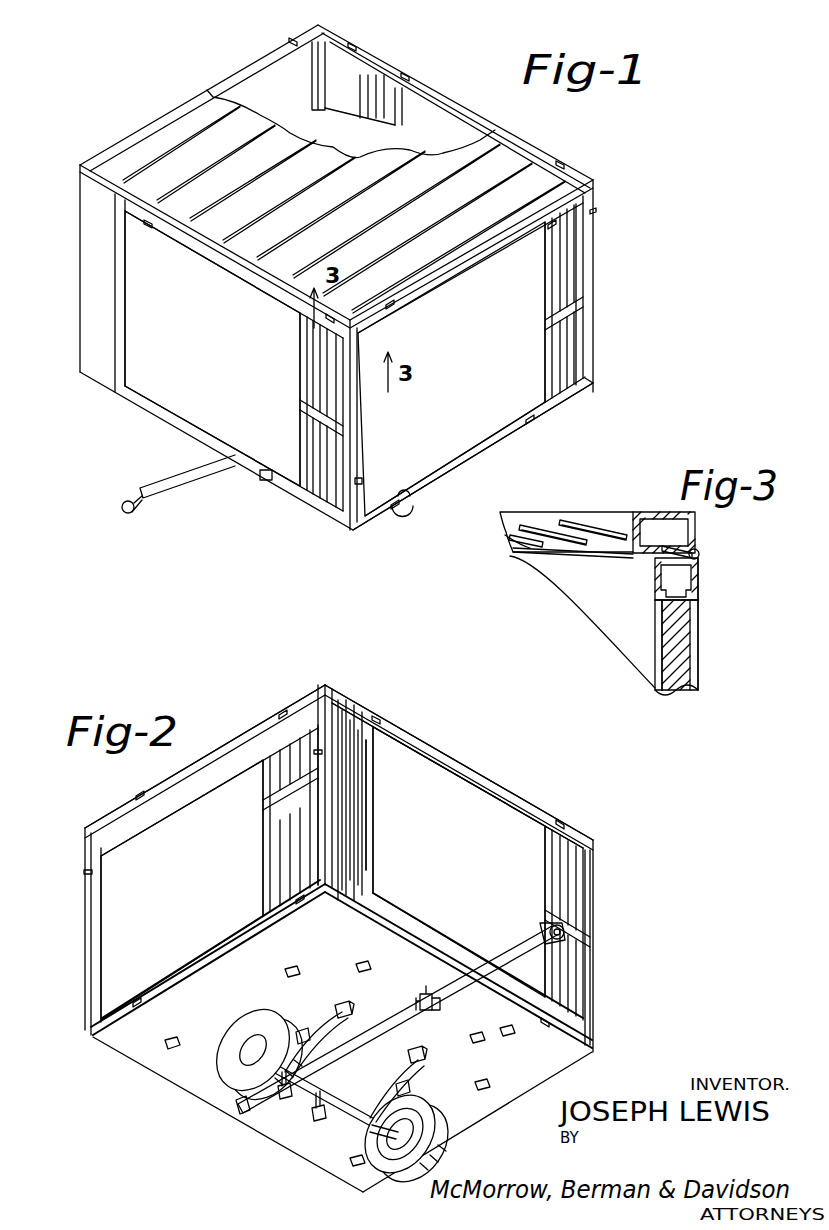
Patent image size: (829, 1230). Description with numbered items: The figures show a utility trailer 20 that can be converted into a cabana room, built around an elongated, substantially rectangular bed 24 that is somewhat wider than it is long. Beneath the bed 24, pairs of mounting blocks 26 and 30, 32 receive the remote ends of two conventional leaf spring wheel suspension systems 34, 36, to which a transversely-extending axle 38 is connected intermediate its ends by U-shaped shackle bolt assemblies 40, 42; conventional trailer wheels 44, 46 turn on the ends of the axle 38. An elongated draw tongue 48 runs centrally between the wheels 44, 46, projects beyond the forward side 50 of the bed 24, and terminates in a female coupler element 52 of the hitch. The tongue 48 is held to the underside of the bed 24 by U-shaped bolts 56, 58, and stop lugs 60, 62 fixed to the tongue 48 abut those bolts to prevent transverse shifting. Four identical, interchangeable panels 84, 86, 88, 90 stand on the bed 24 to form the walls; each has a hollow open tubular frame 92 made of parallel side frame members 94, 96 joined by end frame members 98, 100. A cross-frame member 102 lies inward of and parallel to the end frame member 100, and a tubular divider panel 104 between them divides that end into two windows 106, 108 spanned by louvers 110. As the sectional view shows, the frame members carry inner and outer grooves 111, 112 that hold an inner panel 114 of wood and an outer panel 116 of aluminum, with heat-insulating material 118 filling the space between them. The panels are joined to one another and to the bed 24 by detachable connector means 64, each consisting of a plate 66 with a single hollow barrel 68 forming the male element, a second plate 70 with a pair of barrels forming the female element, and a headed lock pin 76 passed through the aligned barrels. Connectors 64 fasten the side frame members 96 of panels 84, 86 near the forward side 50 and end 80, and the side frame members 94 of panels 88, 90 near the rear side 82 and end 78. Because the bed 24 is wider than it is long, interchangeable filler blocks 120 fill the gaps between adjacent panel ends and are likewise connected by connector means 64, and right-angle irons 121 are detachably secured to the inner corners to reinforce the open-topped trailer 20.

In FIG. 1, the utility trailer 20 is at (132, 426).
In FIG. 2, the utility trailer 20 is at (450, 739).
In FIG. 2, the bed 24 is at (590, 1066).
In FIG. 2, the mounting block 26 is at (352, 1010).
In FIG. 2, the mounting block 30 is at (426, 1057).
In FIG. 2, the mounting block 32 is at (318, 1122).
In FIG. 2, the leaf spring wheel suspension system 34 is at (304, 1030).
In FIG. 2, the leaf spring wheel suspension system 36 is at (412, 1090).
In FIG. 2, the axle 38 is at (330, 1100).
In FIG. 2, the U-shaped shackle bolt assembly 40 is at (313, 1040).
In FIG. 2, the U-shaped shackle bolt assembly 42 is at (368, 1120).
In FIG. 2, the trailer wheel 44 is at (236, 1073).
In FIG. 1, the trailer wheel 46 is at (414, 506).
In FIG. 2, the trailer wheel 46 is at (440, 1145).
In FIG. 1, the draw tongue 48 is at (195, 468).
In FIG. 2, the draw tongue 48 is at (487, 953).
In FIG. 1, the forward side 50 is at (271, 488).
In FIG. 2, the forward side 50 is at (426, 982).
In FIG. 1, the female coupler element 52 is at (133, 513).
In FIG. 2, the female coupler element 52 is at (553, 926).
In FIG. 2, the U-shaped bolt 56 is at (285, 1100).
In FIG. 2, the U-shaped bolt 58 is at (424, 992).
In FIG. 2, the stop lug 60 is at (268, 1114).
In FIG. 2, the stop lug 62 is at (441, 1006).
In FIG. 1, the detachable connector means 64 is at (150, 226).
In FIG. 2, the detachable connector means 64 is at (283, 713).
In FIG. 3, the plate 66 is at (690, 546).
In FIG. 2, the plate 66 is at (362, 964).
In FIG. 1, the hollow tubular barrel 68 is at (293, 40).
In FIG. 3, the second plate 70 is at (692, 575).
In FIG. 2, the second plate 70 is at (180, 1040).
In FIG. 3, the headed lock pin 76 is at (701, 554).
In FIG. 1, the end 78 is at (83, 375).
In FIG. 2, the end 78 is at (245, 935).
In FIG. 1, the end 80 is at (490, 445).
In FIG. 2, the end 80 is at (520, 1108).
In FIG. 1, the rear side 82 is at (593, 390).
In FIG. 2, the rear side 82 is at (165, 1080).
In FIG. 1, the panel 84 is at (138, 404).
In FIG. 2, the panel 84 is at (507, 808).
In FIG. 1, the panel 86 is at (453, 436).
In FIG. 1, the panel 88 is at (493, 108).
In FIG. 1, the panel 90 is at (266, 94).
In FIG. 2, the panel 90 is at (201, 965).
In FIG. 1, the tubular frame 92 is at (233, 268).
In FIG. 2, the tubular frame 92 is at (260, 730).
In FIG. 1, the side frame member 94 is at (268, 300).
In FIG. 2, the side frame member 94 is at (540, 812).
In FIG. 1, the side frame member 96 is at (225, 82).
In FIG. 2, the side frame member 96 is at (222, 760).
In FIG. 1, the end frame member 98 is at (125, 310).
In FIG. 3, the end frame member 98 is at (699, 583).
In FIG. 2, the end frame member 98 is at (372, 820).
In FIG. 1, the end frame member 100 is at (318, 93).
In FIG. 3, the end frame member 100 is at (663, 511).
In FIG. 2, the end frame member 100 is at (332, 760).
In FIG. 1, the cross-frame member 102 is at (410, 84).
In FIG. 2, the cross-frame member 102 is at (262, 845).
In FIG. 1, the divider panel 104 is at (305, 428).
In FIG. 2, the divider panel 104 is at (265, 806).
In FIG. 1, the window 106 is at (343, 401).
In FIG. 2, the window 106 is at (582, 855).
In FIG. 1, the window 108 is at (336, 470).
In FIG. 2, the window 108 is at (592, 956).
In FIG. 1, the louver 110 is at (378, 95).
In FIG. 3, the louver 110 is at (575, 524).
In FIG. 2, the louver 110 is at (305, 860).
In FIG. 3, the inner groove 111 is at (658, 600).
In FIG. 3, the outer groove 112 is at (700, 601).
In FIG. 3, the inner panel 114 is at (640, 668).
In FIG. 3, the outer panel 116 is at (700, 662).
In FIG. 3, the heat-insulating material 118 is at (680, 694).
In FIG. 1, the filler block 120 is at (360, 50).
In FIG. 2, the filler block 120 is at (356, 795).
In FIG. 1, the right-angle iron 121 is at (322, 36).